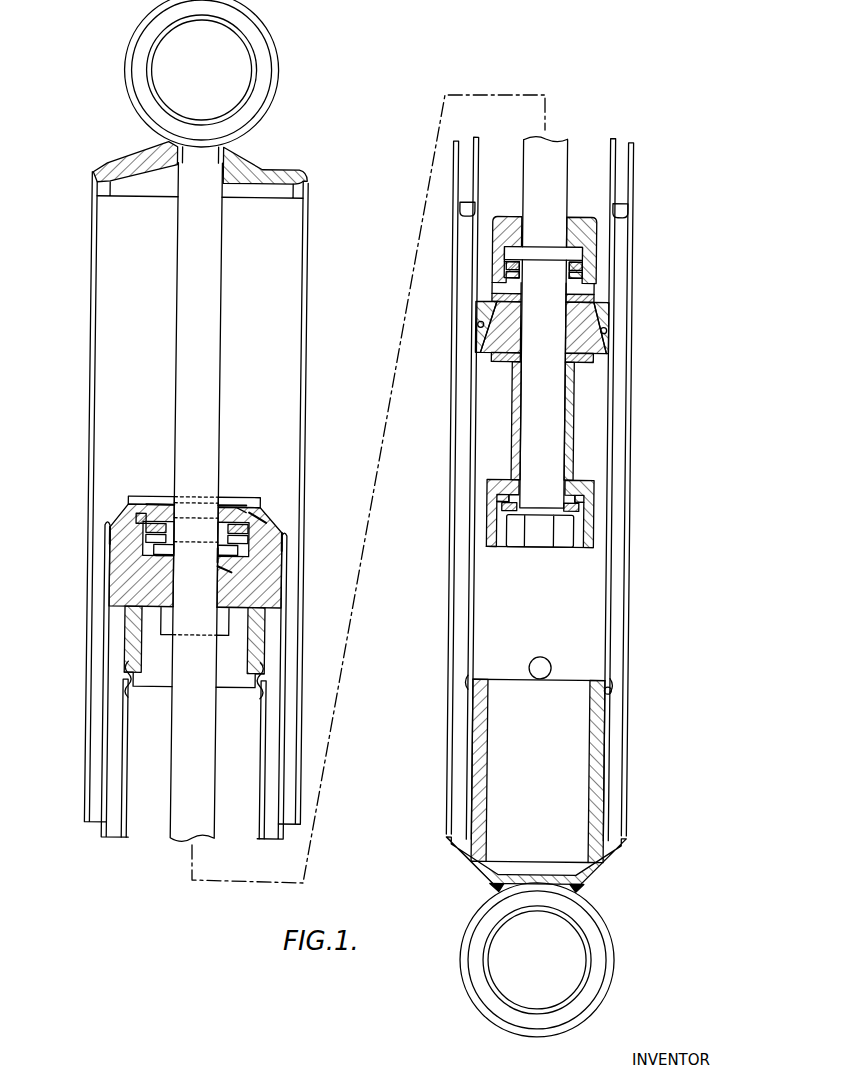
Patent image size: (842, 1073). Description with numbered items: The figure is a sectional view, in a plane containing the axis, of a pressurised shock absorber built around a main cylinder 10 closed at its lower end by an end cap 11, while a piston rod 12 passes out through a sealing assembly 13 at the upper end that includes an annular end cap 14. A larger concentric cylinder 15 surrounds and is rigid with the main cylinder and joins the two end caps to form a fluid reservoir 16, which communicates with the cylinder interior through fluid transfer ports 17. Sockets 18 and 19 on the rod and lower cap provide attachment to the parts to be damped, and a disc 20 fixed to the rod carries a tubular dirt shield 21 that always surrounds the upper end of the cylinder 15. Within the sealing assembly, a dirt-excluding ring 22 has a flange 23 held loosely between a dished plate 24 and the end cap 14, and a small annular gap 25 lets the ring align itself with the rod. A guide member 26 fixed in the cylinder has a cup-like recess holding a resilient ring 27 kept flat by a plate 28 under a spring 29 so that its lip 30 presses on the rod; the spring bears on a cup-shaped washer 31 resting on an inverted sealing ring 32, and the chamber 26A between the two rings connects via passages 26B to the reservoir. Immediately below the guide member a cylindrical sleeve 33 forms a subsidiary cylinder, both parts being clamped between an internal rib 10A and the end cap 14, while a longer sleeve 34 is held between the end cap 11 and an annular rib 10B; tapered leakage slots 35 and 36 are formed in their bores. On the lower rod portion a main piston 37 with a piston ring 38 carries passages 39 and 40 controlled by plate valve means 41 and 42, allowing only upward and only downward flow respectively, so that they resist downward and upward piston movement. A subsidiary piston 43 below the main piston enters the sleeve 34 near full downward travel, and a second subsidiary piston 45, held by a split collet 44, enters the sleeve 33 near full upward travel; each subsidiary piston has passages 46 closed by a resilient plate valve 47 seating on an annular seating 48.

The main cylinder 10 is at (617, 573).
The internal rib 10A is at (266, 677).
The annular rib 10B is at (616, 690).
The end cap 11 is at (480, 863).
The piston rod 12 is at (204, 745).
The sealing assembly 13 is at (221, 555).
The annular end cap 14 is at (267, 515).
The concentric cylinder 15 is at (631, 300).
The fluid reservoir 16 is at (623, 330).
The fluid transfer ports 17 is at (548, 660).
The socket 18 is at (258, 77).
The socket 19 is at (490, 937).
The disc 20 is at (250, 164).
The tubular dirt shield 21 is at (310, 342).
The dirt-excluding ring 22 is at (231, 500).
The radially extending flange 23 is at (161, 500).
The dished plate 24 is at (166, 495).
The annular gap 25 is at (241, 505).
The guide member 26 is at (242, 590).
The chamber 26A is at (137, 527).
The passages 26B is at (287, 533).
The ring 27 is at (147, 520).
The plate 28 is at (144, 538).
The spring 29 is at (141, 547).
The lip 30 is at (212, 556).
The cup-shaped washer 31 is at (222, 553).
The sealing ring 32 is at (224, 570).
The cylindrical sleeve 33 is at (256, 647).
The sleeve 34 is at (598, 720).
The tapered leakage slot 35 is at (153, 677).
The tapered leakage slot 36 is at (498, 693).
The main piston 37 is at (488, 308).
The piston ring 38 is at (483, 325).
The passages 39 is at (492, 343).
The passages 40 is at (588, 343).
The plate valve means 41 is at (508, 295).
The plate valve means 42 is at (585, 360).
The subsidiary piston 43 is at (586, 513).
The split collet 44 is at (584, 252).
The second subsidiary piston 45 is at (592, 227).
The passages 46 is at (581, 280).
The resilient plate valve 47 is at (508, 263).
The annular seating 48 is at (511, 278).